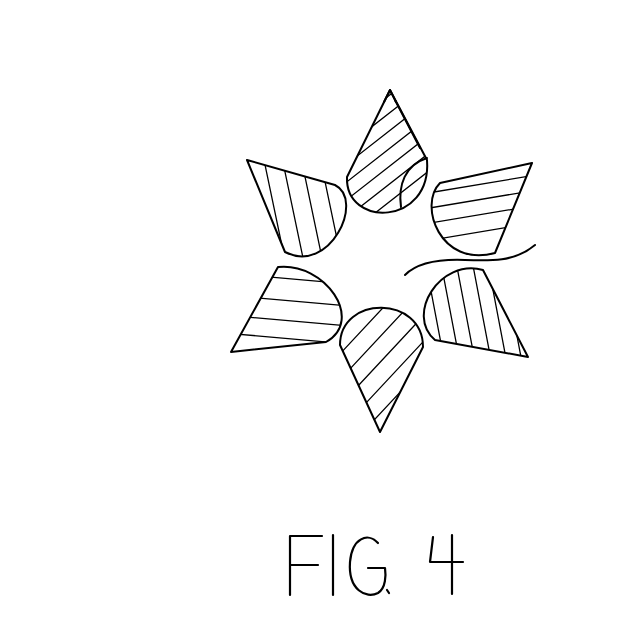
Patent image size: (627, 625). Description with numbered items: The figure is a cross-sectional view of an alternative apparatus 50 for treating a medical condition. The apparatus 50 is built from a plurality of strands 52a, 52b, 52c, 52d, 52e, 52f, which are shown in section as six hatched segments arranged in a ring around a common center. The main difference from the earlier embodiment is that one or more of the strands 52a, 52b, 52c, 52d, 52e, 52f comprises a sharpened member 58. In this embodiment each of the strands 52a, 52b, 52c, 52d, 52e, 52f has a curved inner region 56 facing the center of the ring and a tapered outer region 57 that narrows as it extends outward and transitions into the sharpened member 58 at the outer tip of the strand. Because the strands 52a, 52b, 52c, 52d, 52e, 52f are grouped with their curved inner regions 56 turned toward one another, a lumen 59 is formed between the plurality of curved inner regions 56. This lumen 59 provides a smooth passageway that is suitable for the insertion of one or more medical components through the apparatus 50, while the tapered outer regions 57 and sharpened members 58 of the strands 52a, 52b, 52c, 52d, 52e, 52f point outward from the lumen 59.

The apparatus 50 is at (244, 122).
The strand 52a is at (368, 379).
The strand 52b is at (278, 307).
The strand 52c is at (275, 200).
The strand 52d is at (383, 143).
The strand 52e is at (505, 195).
The strand 52f is at (473, 340).
The curved inner region 56 is at (427, 158).
The tapered outer region 57 is at (405, 125).
The sharpened member 58 is at (389, 88).
The lumen 59 is at (492, 255).